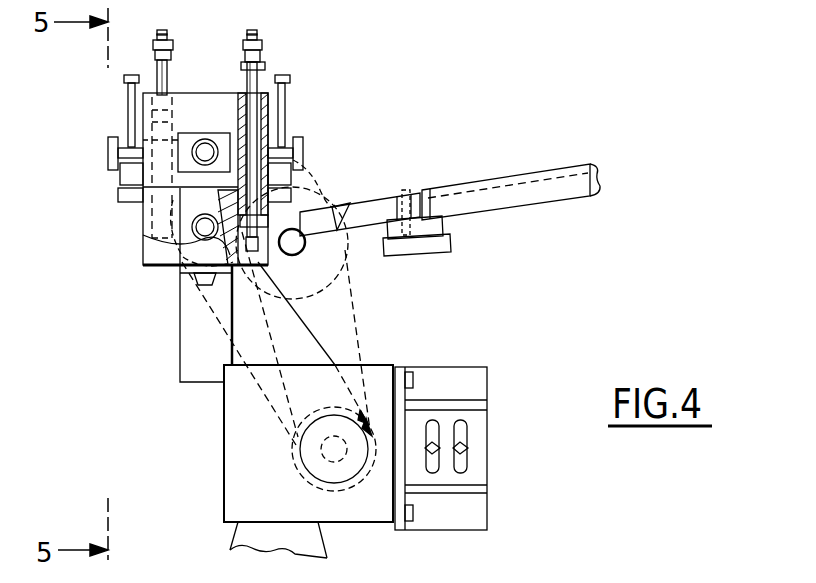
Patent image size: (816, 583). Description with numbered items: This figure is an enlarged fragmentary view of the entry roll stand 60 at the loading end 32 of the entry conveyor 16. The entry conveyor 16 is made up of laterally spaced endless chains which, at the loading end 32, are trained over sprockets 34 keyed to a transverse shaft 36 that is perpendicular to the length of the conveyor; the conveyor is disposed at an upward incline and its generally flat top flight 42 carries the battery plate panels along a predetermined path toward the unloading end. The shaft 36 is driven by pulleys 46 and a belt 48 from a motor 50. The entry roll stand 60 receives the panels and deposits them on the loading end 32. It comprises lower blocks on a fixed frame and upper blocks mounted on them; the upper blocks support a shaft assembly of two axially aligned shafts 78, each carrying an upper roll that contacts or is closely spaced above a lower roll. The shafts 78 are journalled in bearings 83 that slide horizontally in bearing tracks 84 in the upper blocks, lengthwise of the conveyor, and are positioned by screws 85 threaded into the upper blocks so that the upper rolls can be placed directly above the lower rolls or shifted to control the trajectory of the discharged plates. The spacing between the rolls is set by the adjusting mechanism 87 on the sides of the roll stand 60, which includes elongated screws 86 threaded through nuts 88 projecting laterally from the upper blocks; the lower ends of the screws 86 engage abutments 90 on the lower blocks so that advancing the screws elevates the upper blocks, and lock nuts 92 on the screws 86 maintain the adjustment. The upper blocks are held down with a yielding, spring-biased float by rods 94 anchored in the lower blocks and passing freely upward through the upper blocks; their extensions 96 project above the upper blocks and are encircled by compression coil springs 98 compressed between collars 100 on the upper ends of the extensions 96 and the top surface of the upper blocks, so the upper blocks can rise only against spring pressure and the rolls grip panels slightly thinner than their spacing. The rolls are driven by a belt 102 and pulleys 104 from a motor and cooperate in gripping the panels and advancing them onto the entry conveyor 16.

The entry conveyor 16 is at (533, 168).
The loading end 32 is at (372, 202).
The sprockets 34 is at (334, 182).
The transverse shaft 36 is at (343, 206).
The top flight 42 is at (590, 166).
The pulleys 46 is at (350, 286).
The belt 48 is at (362, 338).
The motor 50 is at (380, 373).
The entry roll stand 60 is at (250, 4).
The shafts 78 is at (240, 130).
The bearings 83 is at (207, 139).
The bearing tracks 84 is at (193, 133).
The screws 85 is at (118, 140).
The elongated screws 86 is at (126, 82).
The adjusting mechanism 87 is at (318, 68).
The nuts 88 is at (118, 178).
The abutments 90 is at (114, 200).
The lock nuts 92 is at (120, 165).
The rods 94 is at (152, 240).
The extensions 96 is at (159, 70).
The compression coil springs 98 is at (264, 74).
The collars 100 is at (160, 42).
The belt 102 is at (210, 308).
The pulleys 104 is at (166, 264).